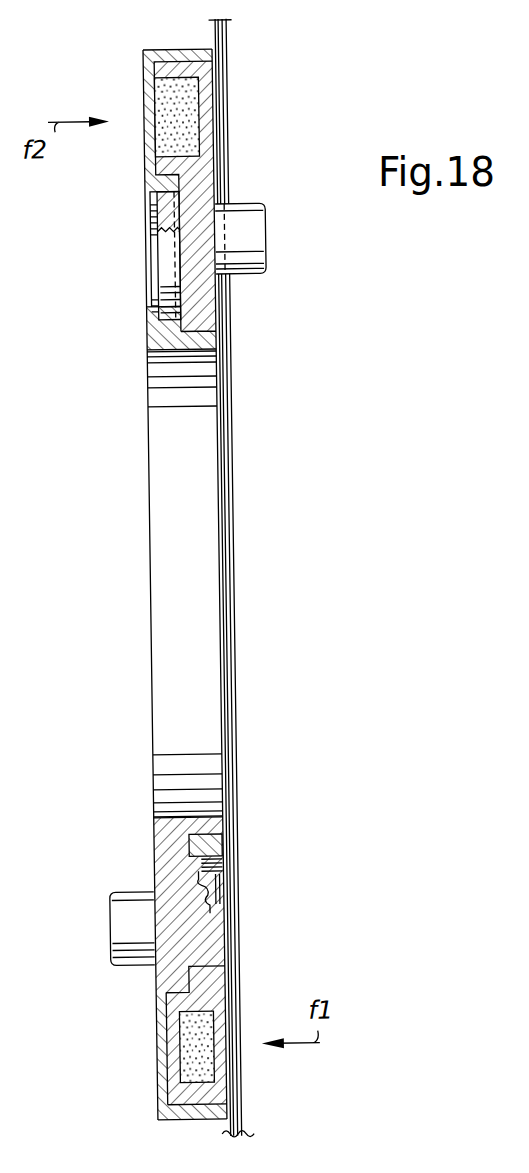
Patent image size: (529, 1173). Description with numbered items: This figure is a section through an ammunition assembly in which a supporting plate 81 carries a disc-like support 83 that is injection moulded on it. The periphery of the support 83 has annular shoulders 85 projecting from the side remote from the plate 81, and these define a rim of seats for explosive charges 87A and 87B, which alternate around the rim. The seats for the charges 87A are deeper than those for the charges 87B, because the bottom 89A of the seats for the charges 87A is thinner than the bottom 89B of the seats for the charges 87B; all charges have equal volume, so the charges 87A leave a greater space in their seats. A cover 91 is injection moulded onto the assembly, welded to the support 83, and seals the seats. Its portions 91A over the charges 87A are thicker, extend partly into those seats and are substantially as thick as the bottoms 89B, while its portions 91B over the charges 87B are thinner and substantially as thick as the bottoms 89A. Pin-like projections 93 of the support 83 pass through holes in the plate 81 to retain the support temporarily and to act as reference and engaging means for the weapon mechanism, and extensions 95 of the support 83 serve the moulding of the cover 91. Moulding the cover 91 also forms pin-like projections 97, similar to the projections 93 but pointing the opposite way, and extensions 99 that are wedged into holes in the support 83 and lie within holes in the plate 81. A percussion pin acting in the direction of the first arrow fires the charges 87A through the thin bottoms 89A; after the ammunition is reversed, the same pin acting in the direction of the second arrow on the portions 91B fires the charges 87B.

The supporting plate 81 is at (222, 416).
The disc-like support 83 is at (197, 305).
The annular shoulders 85 is at (160, 1097).
The explosive charges (even numbered) 87A is at (167, 1023).
The explosive charges (odd numbered) 87B is at (165, 143).
The seat bottom 89A is at (206, 1075).
The seat bottom 89B is at (205, 82).
The cover 91 is at (156, 48).
The cover portion 91A is at (148, 1043).
The cover portion 91B is at (149, 92).
The pin-like projections 93 is at (244, 214).
The extensions 95 is at (162, 259).
The pin-like projections 97 is at (100, 898).
The extensions 99 is at (218, 890).